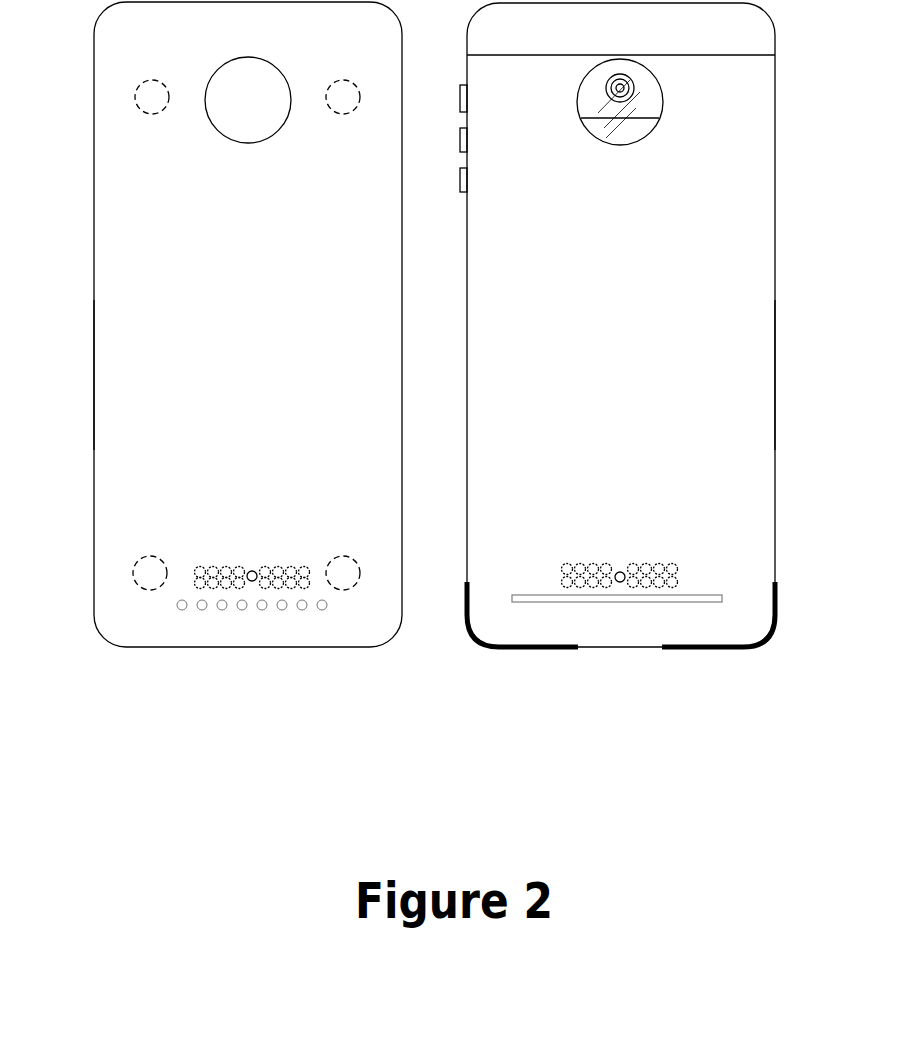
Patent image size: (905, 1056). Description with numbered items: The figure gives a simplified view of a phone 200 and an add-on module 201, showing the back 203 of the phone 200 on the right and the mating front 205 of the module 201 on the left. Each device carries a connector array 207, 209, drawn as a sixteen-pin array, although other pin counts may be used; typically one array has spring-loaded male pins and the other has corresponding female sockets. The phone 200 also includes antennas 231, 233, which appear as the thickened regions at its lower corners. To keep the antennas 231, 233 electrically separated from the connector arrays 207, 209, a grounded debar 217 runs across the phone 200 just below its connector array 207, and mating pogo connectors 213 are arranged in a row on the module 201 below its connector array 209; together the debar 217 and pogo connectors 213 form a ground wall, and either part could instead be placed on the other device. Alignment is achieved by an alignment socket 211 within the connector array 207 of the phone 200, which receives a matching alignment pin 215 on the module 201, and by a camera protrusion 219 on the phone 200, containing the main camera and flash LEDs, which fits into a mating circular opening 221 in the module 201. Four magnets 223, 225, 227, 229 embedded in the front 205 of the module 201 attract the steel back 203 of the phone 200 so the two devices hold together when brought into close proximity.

The phone 200 is at (681, 676).
The module 201 is at (232, 678).
The back of the phone 203 is at (754, 380).
The front of the module 205 is at (118, 377).
The connector array 207 is at (640, 550).
The connector array 209 is at (260, 565).
The alignment socket 211 is at (618, 571).
The pogo connectors 213 is at (180, 599).
The alignment pin 215 is at (252, 581).
The debar 217 is at (692, 595).
The camera protrusion 219 is at (650, 135).
The circular opening 221 is at (262, 142).
The magnet 223 is at (145, 560).
The magnet 225 is at (340, 560).
The magnet 227 is at (145, 82).
The magnet 229 is at (338, 82).
The antenna 231 is at (497, 648).
The antenna 233 is at (758, 648).